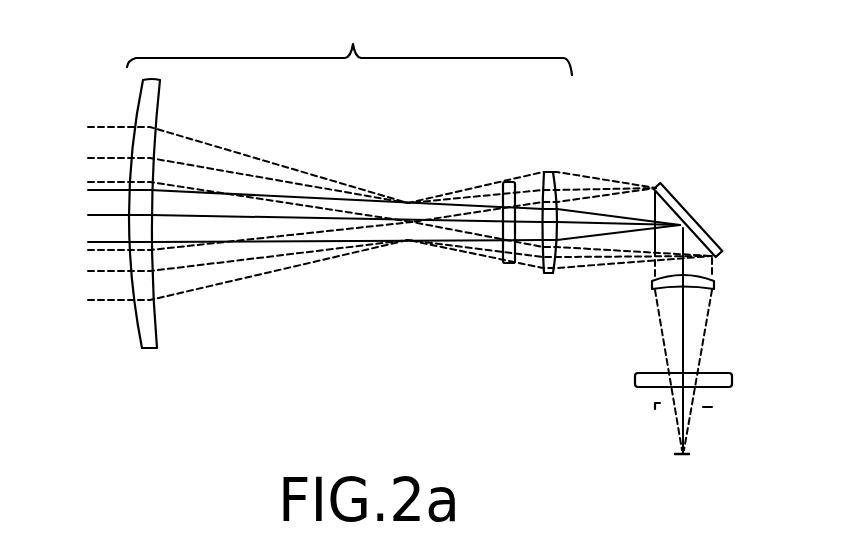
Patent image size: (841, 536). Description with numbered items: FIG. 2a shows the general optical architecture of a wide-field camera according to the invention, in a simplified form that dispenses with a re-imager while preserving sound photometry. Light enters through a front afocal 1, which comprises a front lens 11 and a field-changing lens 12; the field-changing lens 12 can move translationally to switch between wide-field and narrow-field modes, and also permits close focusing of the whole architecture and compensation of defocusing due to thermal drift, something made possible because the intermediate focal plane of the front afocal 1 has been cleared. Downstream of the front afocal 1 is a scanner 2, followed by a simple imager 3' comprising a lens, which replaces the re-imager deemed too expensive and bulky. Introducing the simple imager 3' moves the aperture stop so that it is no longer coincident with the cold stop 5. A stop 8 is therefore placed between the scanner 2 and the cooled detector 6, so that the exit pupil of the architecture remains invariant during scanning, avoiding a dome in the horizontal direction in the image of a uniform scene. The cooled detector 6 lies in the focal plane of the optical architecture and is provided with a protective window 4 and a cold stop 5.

The front afocal 1 is at (353, 40).
The front lens 11 is at (150, 348).
The field-changing lens 12 is at (505, 265).
The scanner 2 is at (690, 220).
The simple imager 3' is at (629, 301).
The stop 8 is at (653, 292).
The protective window 4 is at (633, 382).
The cold stop 5 is at (657, 410).
The cooled detector 6 is at (683, 457).